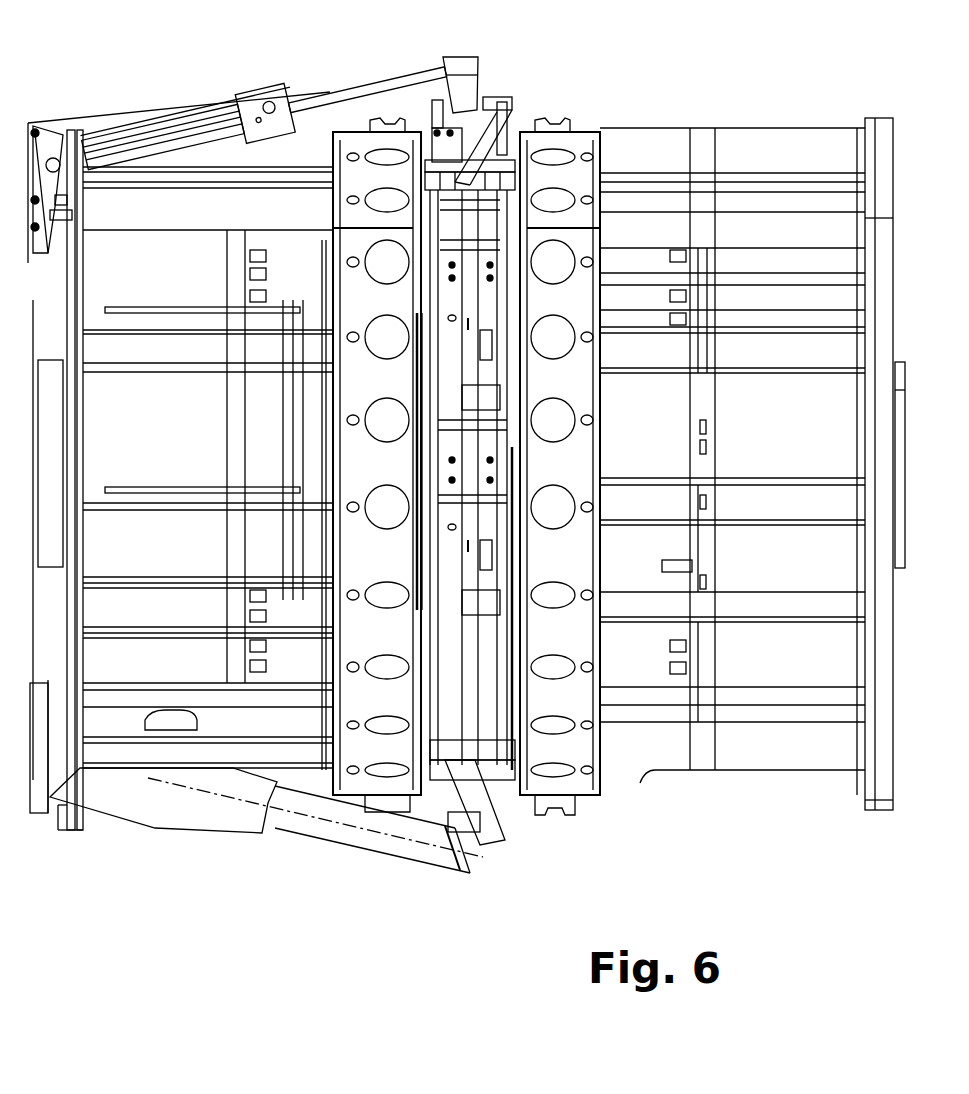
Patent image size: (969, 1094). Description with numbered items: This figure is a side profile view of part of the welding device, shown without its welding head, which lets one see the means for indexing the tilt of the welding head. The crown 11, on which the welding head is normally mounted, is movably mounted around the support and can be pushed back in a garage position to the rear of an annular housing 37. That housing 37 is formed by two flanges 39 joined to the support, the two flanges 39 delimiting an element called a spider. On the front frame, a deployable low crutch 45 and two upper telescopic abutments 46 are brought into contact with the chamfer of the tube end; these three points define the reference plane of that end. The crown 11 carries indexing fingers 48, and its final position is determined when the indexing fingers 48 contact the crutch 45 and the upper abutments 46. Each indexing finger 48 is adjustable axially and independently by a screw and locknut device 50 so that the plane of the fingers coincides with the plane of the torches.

The crown 11 is at (470, 273).
The annular housing 37 is at (490, 323).
The flanges 39 is at (355, 690).
The low crutch 45 is at (397, 840).
The upper telescopic abutments 46 is at (370, 97).
The indexing fingers 48 is at (507, 128).
The screw and locknut devices 50 is at (488, 105).